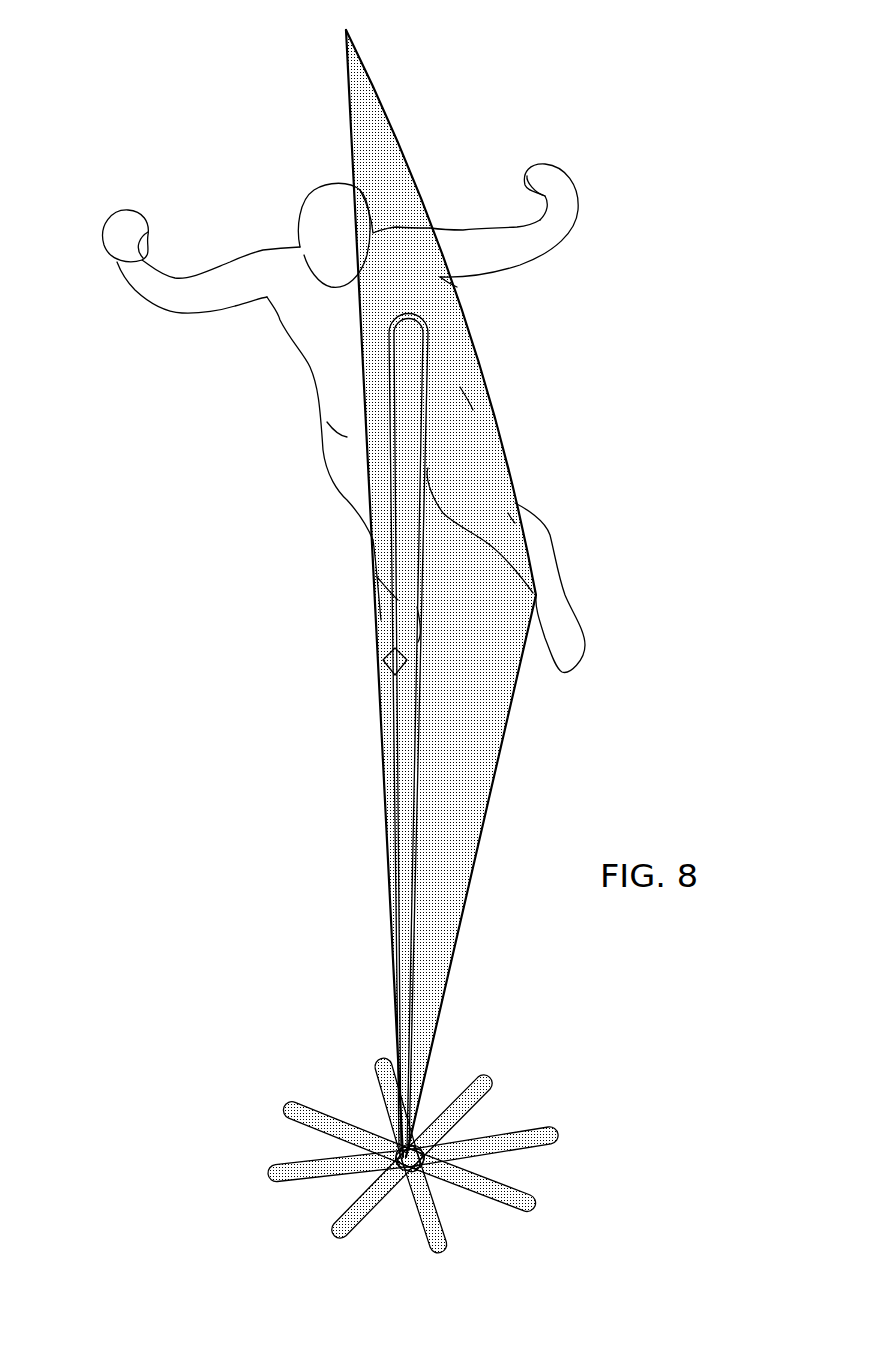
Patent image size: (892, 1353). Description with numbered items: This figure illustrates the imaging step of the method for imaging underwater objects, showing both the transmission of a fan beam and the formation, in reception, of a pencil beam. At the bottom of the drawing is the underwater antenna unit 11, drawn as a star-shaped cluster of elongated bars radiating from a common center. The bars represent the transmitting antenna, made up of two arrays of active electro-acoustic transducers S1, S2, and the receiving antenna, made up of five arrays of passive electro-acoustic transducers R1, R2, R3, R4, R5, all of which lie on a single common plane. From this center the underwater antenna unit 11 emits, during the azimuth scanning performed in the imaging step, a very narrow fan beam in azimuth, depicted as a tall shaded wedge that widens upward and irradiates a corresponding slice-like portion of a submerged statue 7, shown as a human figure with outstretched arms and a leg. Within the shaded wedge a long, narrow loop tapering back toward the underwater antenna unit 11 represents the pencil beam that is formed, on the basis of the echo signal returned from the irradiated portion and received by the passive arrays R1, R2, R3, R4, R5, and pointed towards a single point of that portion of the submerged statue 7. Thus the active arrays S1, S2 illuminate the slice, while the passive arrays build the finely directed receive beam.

The submerged statue 7 is at (253, 272).
The underwater antenna unit 11 is at (628, 1172).
The array of passive electro-acoustic transducers R1 is at (446, 1241).
The array of passive electro-acoustic transducers R2 is at (351, 1234).
The array of passive electro-acoustic transducers R3 is at (481, 1080).
The array of passive electro-acoustic transducers R4 is at (531, 1203).
The array of passive electro-acoustic transducers R5 is at (310, 1104).
The array of active electro-acoustic transducers S1 is at (559, 1131).
The array of active electro-acoustic transducers S2 is at (286, 1180).